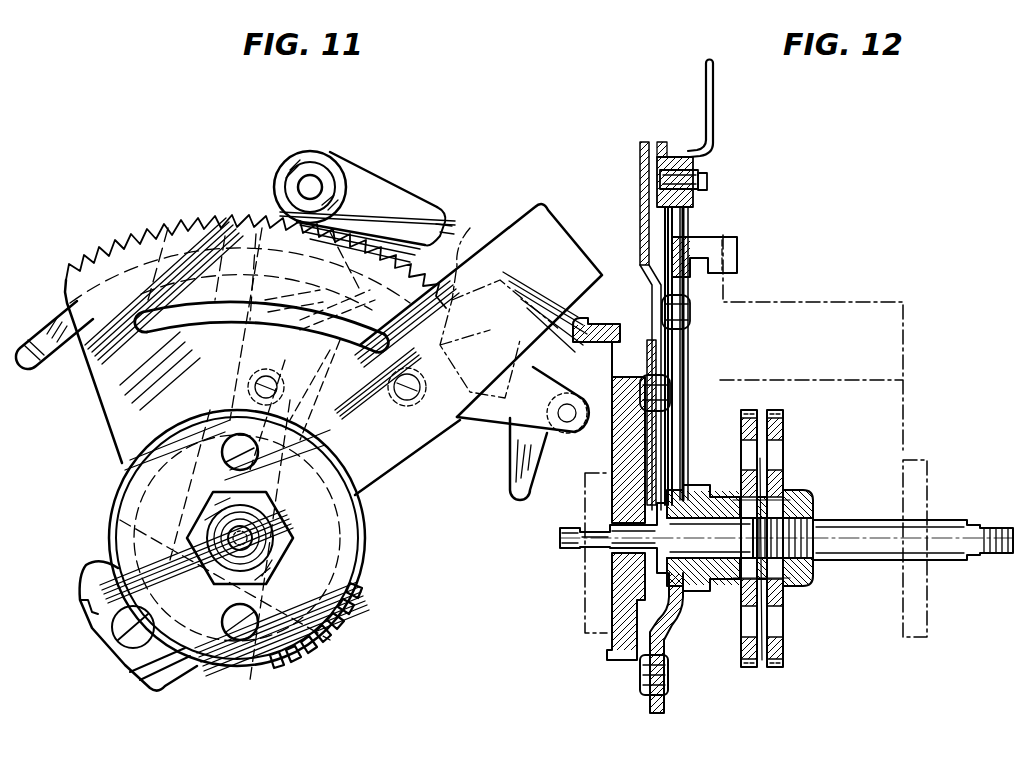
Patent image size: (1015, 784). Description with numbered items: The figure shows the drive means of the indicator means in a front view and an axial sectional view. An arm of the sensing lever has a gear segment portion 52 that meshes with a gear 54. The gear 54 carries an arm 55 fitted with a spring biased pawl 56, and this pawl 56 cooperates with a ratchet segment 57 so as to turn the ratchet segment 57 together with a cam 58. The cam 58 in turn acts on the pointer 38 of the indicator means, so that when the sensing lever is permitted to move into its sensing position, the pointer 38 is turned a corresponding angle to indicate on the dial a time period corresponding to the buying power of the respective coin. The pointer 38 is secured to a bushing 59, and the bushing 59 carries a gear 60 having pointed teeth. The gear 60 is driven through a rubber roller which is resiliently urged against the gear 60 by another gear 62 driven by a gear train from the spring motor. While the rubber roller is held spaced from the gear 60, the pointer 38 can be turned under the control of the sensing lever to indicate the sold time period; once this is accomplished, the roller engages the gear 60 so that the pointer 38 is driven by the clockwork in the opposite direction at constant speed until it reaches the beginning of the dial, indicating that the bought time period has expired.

In FIG. 11, the pointer 38 is at (550, 234).
In FIG. 12, the pointer 38 is at (710, 133).
In FIG. 12, the gear segment portion 52 is at (617, 388).
In FIG. 12, the gear 54 is at (625, 663).
In FIG. 11, the arm 55 is at (277, 212).
In FIG. 12, the arm 55 is at (658, 442).
In FIG. 11, the spring biased pawl 56 is at (396, 197).
In FIG. 12, the spring biased pawl 56 is at (692, 237).
In FIG. 11, the ratchet segment 57 is at (157, 238).
In FIG. 11, the cam 58 is at (500, 300).
In FIG. 12, the cam 58 is at (814, 312).
In FIG. 12, the bushing 59 is at (700, 598).
In FIG. 12, the gear 60 is at (740, 650).
In FIG. 11, the gear 62 is at (338, 571).
In FIG. 12, the gear 62 is at (784, 657).